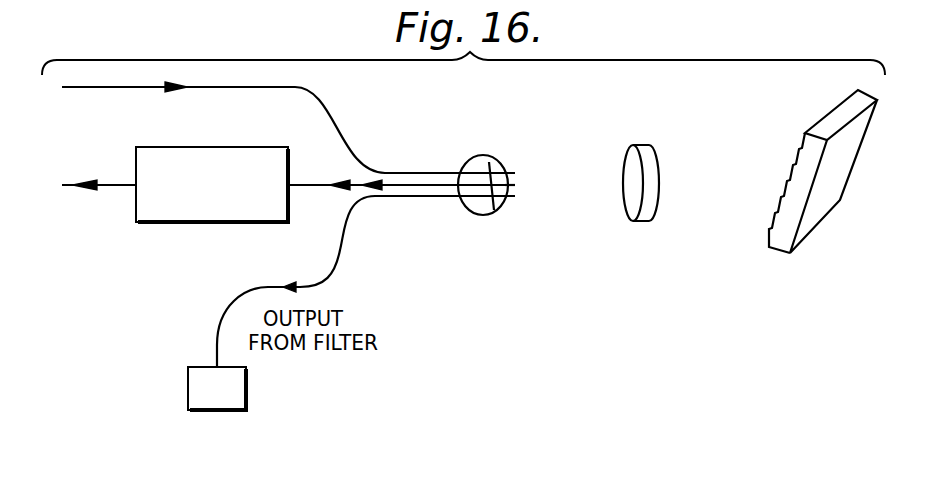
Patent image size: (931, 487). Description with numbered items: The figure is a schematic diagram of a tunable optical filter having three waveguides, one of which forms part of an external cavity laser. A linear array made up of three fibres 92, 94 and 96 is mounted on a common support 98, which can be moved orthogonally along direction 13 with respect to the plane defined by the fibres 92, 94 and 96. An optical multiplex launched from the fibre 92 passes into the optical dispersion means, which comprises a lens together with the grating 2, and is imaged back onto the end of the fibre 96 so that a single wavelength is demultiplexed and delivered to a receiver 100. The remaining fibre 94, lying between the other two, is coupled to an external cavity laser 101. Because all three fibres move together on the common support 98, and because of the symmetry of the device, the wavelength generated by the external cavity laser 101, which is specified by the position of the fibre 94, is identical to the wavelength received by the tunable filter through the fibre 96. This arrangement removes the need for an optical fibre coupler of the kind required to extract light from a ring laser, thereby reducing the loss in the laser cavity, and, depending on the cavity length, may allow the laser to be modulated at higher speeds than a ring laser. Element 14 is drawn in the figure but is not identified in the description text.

The grating 2 is at (845, 108).
The direction 13 is at (514, 159).
The lens 14 is at (649, 145).
The fibre 92 is at (494, 210).
The fibre 94 is at (515, 191).
The fibre 96 is at (455, 198).
The common support 98 is at (481, 155).
The receiver 100 is at (226, 411).
The external cavity laser 101 is at (210, 223).